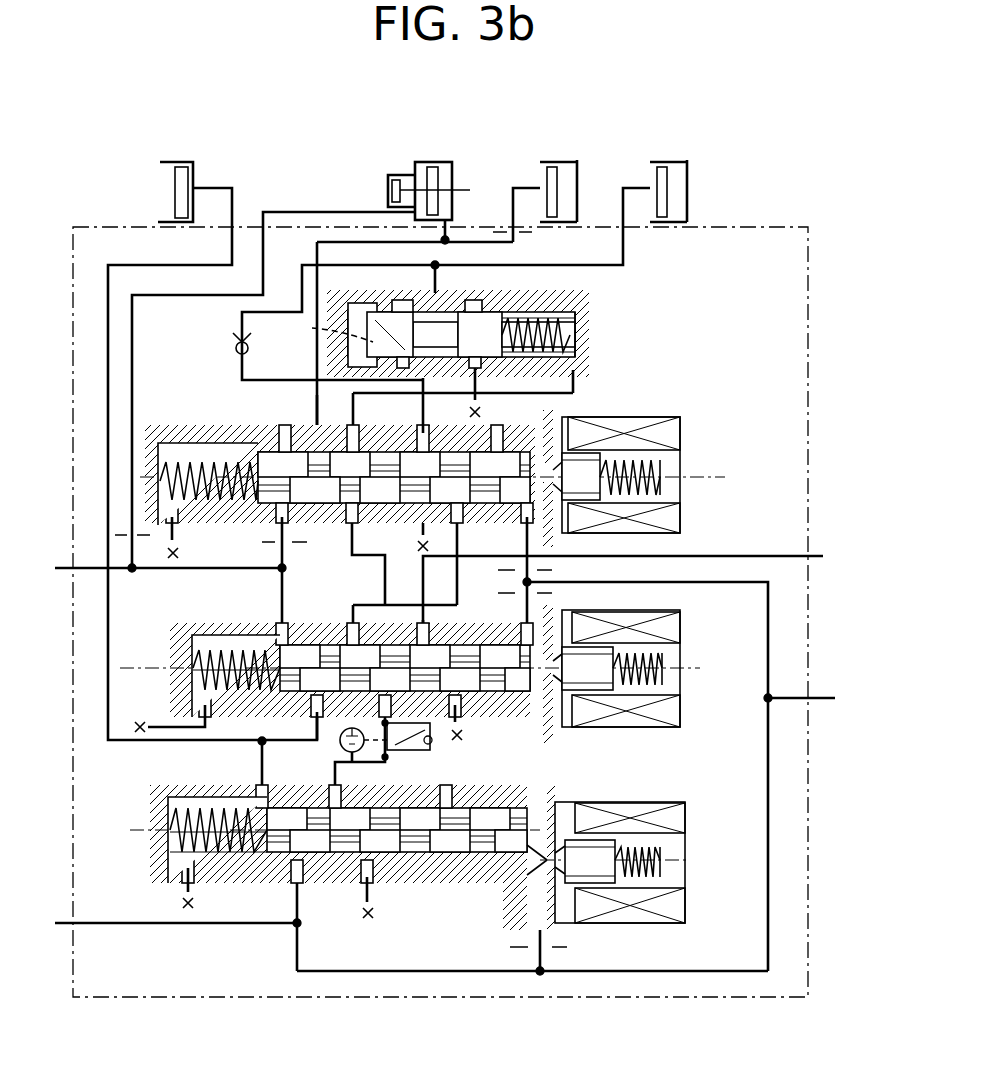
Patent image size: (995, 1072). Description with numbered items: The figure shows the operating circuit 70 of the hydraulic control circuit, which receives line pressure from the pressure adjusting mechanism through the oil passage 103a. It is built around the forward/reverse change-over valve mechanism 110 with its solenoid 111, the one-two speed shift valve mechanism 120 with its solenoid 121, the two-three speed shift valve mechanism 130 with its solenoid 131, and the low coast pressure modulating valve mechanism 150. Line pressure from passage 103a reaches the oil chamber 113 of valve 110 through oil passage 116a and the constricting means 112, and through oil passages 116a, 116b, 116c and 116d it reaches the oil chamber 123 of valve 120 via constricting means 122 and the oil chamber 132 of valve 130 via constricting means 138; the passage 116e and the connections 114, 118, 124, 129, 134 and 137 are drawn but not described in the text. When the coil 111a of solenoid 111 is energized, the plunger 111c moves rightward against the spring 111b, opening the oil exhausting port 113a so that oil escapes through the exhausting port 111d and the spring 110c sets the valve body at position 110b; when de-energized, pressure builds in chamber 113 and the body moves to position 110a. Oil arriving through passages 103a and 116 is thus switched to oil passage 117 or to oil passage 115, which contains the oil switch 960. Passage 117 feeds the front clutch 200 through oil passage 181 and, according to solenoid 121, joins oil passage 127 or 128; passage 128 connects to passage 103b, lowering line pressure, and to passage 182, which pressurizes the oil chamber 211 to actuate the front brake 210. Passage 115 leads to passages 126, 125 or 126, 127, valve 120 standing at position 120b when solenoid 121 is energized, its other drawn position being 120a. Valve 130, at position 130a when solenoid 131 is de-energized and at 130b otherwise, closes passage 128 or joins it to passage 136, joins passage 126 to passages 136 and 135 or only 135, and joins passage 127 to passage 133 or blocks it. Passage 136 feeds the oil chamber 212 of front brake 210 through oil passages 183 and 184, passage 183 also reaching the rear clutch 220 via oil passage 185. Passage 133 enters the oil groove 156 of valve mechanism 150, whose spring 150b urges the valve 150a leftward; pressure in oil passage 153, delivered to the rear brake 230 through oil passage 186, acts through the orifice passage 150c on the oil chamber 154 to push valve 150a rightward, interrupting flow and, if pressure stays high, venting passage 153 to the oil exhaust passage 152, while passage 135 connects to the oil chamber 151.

The operating circuit 70 is at (627, 1000).
The front clutch 200 is at (176, 160).
The front brake 210 is at (435, 160).
The oil chamber 211 is at (410, 166).
The oil chamber 212 is at (440, 172).
The rear clutch 220 is at (560, 160).
The rear brake 230 is at (668, 160).
The oil passage 181 is at (232, 252).
The oil passage 182 is at (263, 262).
The oil passage 183 is at (400, 245).
The oil passage 184 is at (448, 228).
The oil passage 185 is at (500, 250).
The oil passage 186 is at (625, 248).
The low coast pressure modulating valve mechanism 150 is at (469, 334).
The valve 150a is at (582, 328).
The spring 150b is at (582, 352).
The orifice passage 150c is at (319, 340).
The oil chamber 151 is at (578, 300).
The oil exhaust passage 152 is at (480, 385).
The oil passage 153 is at (437, 278).
The oil chamber 154 is at (362, 305).
The oil groove 156 is at (402, 301).
The 2–3 speed shift valve mechanism 130 is at (432, 460).
The position of 2–3 speed shift valve 130a is at (176, 450).
The port 130b is at (280, 535).
The solenoid for the 2–3 speed shift valve 131 is at (682, 440).
The oil chamber 132 is at (497, 436).
The oil passage 133 is at (424, 404).
The port 134 is at (403, 545).
The oil passage 135 is at (366, 398).
The oil passage 136 is at (317, 402).
The drain port 137 is at (175, 540).
The constricting means 138 is at (548, 573).
The oil passage 103a is at (176, 926).
The passage 103b is at (58, 571).
The 1–2 speed shift valve mechanism 120 is at (407, 647).
The spring 120a is at (200, 648).
The position of 1–2 speed shift valve 120b is at (222, 683).
The solenoid for the 1–2 speed shift valve 121 is at (684, 712).
The constricting means 122 is at (545, 600).
The oil chamber 123 is at (526, 610).
The drain port 124 is at (458, 722).
The oil passage 125 is at (823, 555).
The oil passage 126 is at (386, 576).
The oil passage 127 is at (458, 542).
The oil passage 128 is at (280, 594).
The drain port 129 is at (165, 720).
The forward/reverse change-over valve mechanism 110 is at (327, 839).
The position of forward/reverse shift valve 110a is at (185, 818).
The position of forward/reverse shift valve 110b is at (190, 845).
The spring 110c is at (185, 860).
The solenoid for the forward/reverse change-over valve 111 is at (653, 857).
The coil 111a is at (683, 818).
The spring 111b is at (660, 849).
The plunger 111c is at (665, 873).
The oil exhausting port 111d is at (560, 926).
The constricting means 112 is at (555, 952).
The oil chamber 113 is at (446, 787).
The oil exhausting port 113a is at (535, 858).
The drain port 114 is at (369, 890).
The oil passage 115 is at (387, 758).
The oil passage 116 is at (299, 895).
The oil passage 116a is at (420, 970).
The oil passage 116b is at (708, 969).
The oil passage 116c is at (766, 762).
The oil passage 116d is at (722, 585).
The oil passage 116e is at (825, 696).
The oil passage 117 is at (316, 730).
The drain port 118 is at (190, 892).
The oil switch 960 is at (340, 752).